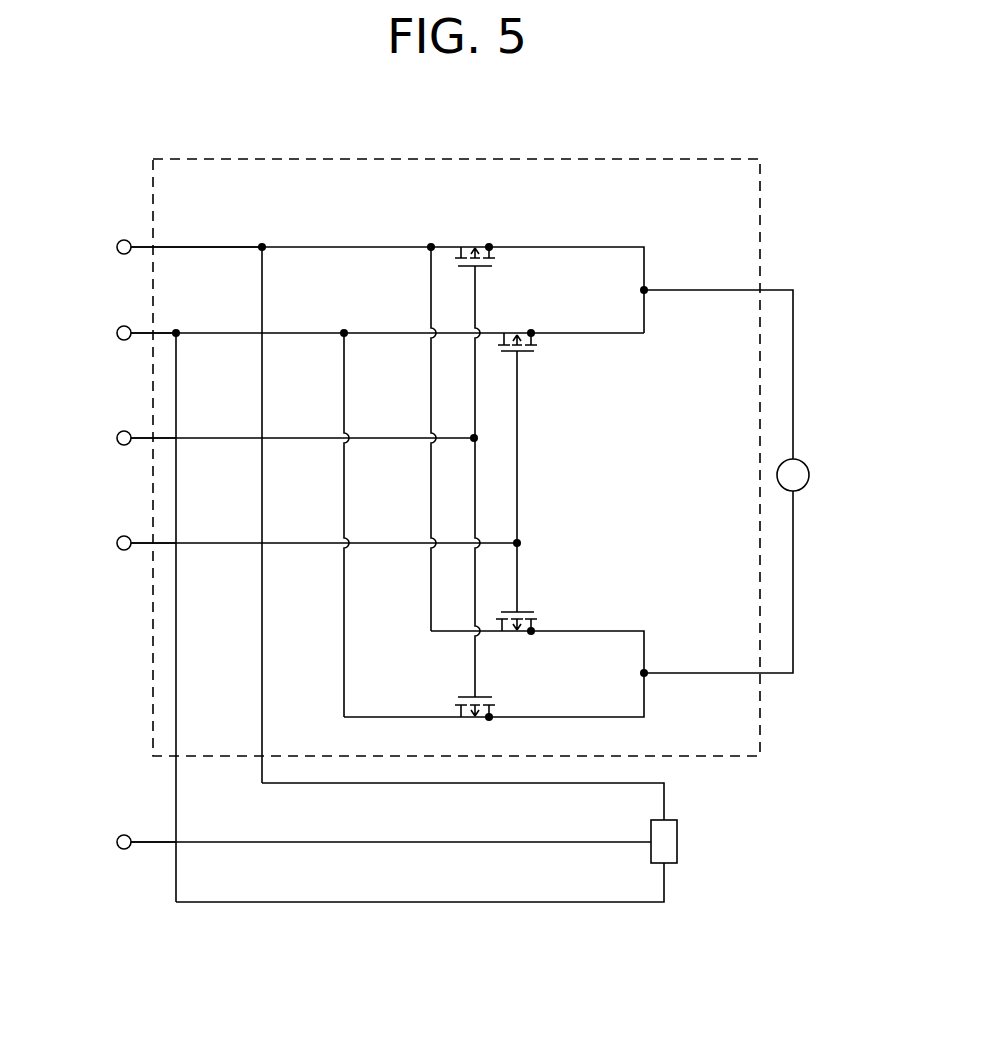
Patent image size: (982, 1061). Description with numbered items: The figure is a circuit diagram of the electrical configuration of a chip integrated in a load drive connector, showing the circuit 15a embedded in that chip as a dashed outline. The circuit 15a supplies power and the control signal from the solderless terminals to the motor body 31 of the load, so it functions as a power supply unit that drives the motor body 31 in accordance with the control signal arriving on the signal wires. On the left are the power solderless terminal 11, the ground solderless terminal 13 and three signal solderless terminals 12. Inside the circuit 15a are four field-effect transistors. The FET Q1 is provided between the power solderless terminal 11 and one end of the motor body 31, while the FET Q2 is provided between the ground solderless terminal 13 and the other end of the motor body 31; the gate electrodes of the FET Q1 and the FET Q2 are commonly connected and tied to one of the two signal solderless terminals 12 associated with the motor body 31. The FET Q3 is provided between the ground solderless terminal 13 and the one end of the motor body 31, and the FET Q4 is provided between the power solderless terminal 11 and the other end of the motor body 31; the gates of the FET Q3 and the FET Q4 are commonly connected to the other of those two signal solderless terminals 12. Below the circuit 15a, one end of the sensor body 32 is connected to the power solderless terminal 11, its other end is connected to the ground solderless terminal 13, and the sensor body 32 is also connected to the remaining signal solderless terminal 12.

The power solderless terminal 11 is at (117, 247).
The ground solderless terminal 13 is at (117, 333).
The signal solderless terminals 12 is at (117, 842).
The circuit 15a is at (565, 159).
The motor body 31 is at (803, 462).
The sensor body 32 is at (677, 838).
The field-effect transistor Q1 is at (491, 262).
The field-effect transistor Q2 is at (485, 697).
The field-effect transistor Q3 is at (532, 350).
The field-effect transistor Q4 is at (523, 612).